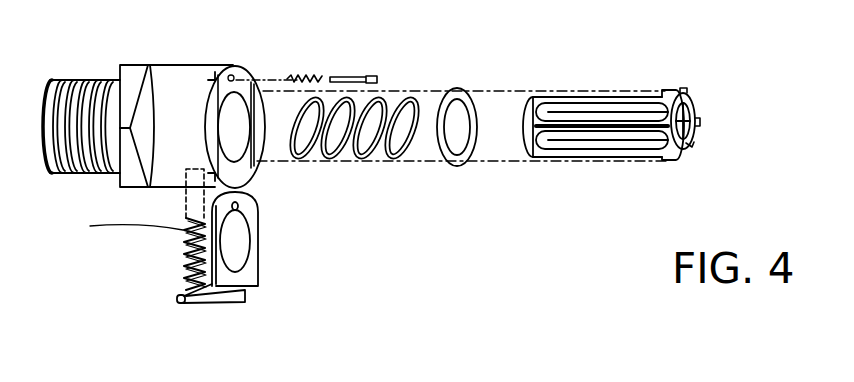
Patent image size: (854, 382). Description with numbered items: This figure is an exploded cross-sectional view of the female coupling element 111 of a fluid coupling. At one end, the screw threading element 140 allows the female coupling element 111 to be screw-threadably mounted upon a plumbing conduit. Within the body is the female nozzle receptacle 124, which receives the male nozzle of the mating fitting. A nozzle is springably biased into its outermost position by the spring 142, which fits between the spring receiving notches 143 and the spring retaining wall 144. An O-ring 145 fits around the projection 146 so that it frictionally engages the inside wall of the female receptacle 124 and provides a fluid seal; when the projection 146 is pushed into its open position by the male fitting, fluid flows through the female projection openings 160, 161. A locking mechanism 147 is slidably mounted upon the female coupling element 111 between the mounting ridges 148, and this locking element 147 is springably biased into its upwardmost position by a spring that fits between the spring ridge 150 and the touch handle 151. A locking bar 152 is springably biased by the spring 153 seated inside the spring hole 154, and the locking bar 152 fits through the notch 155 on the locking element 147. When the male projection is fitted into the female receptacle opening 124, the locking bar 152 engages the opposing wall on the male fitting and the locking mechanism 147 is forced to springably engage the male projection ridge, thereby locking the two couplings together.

The female coupling element 111 is at (151, 266).
The female nozzle receptacle 124 is at (233, 150).
The screw threading element 140 is at (73, 82).
The spring 142 is at (395, 163).
The spring receiving notches 143 is at (685, 92).
The spring retaining wall 144 is at (140, 72).
The O-ring 145 is at (460, 90).
The projection 146 is at (592, 95).
The locking mechanism 147 is at (185, 303).
The mounting ridges 148 is at (260, 138).
The spring ridge 150 is at (196, 186).
The touch handle 151 is at (247, 289).
The locking bar 152 is at (350, 78).
The spring 153 is at (304, 76).
The spring hole 154 is at (233, 76).
The notch 155 is at (237, 208).
The female projection opening 160 is at (692, 128).
The female projection openings 161 is at (556, 110).